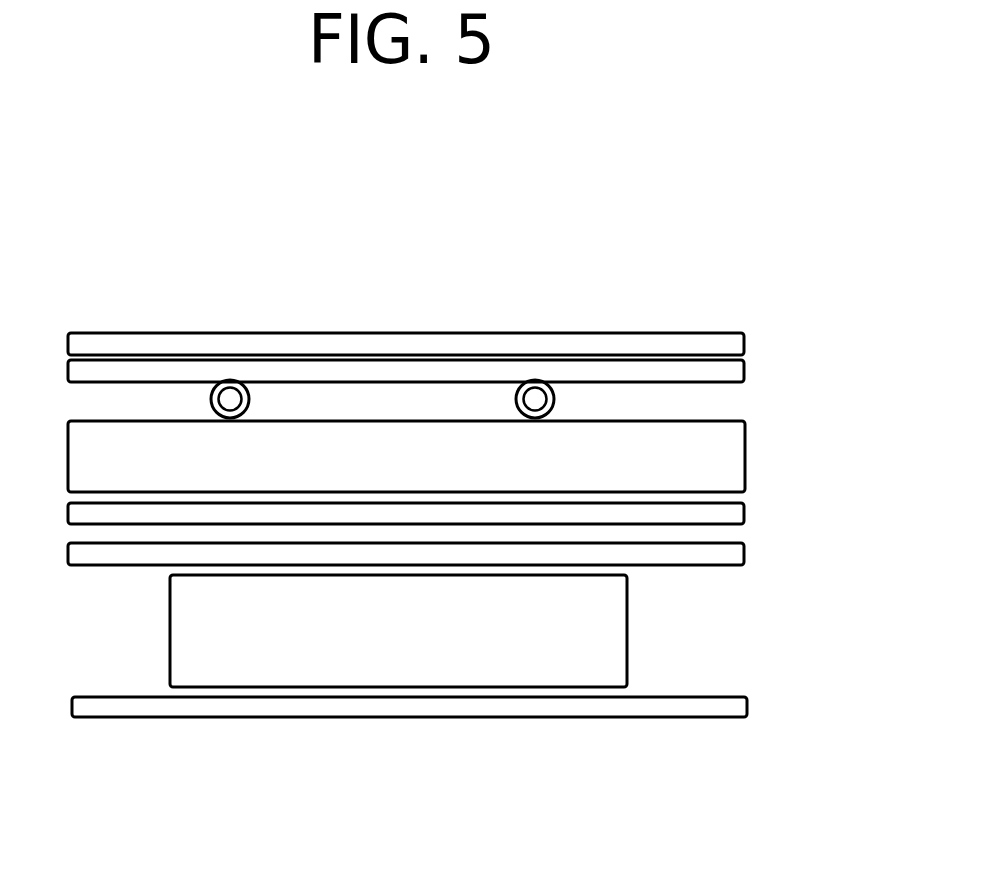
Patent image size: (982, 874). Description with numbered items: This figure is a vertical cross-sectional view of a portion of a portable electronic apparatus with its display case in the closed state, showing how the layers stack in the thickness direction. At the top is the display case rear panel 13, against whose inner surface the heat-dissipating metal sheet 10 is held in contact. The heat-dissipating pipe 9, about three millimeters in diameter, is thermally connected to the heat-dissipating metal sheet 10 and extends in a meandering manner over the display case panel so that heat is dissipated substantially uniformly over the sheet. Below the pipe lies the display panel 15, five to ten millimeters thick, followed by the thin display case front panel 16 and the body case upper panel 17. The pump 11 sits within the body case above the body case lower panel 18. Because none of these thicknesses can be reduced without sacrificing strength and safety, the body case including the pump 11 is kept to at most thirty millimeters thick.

The heat-dissipating pipe 9 is at (535, 385).
The heat-dissipating metal sheet 10 is at (733, 370).
The pump 11 is at (375, 657).
The display case rear panel 13 is at (733, 343).
The display panel 15 is at (730, 458).
The display case front panel 16 is at (730, 514).
The body case upper panel 17 is at (730, 552).
The body case lower panel 18 is at (735, 707).